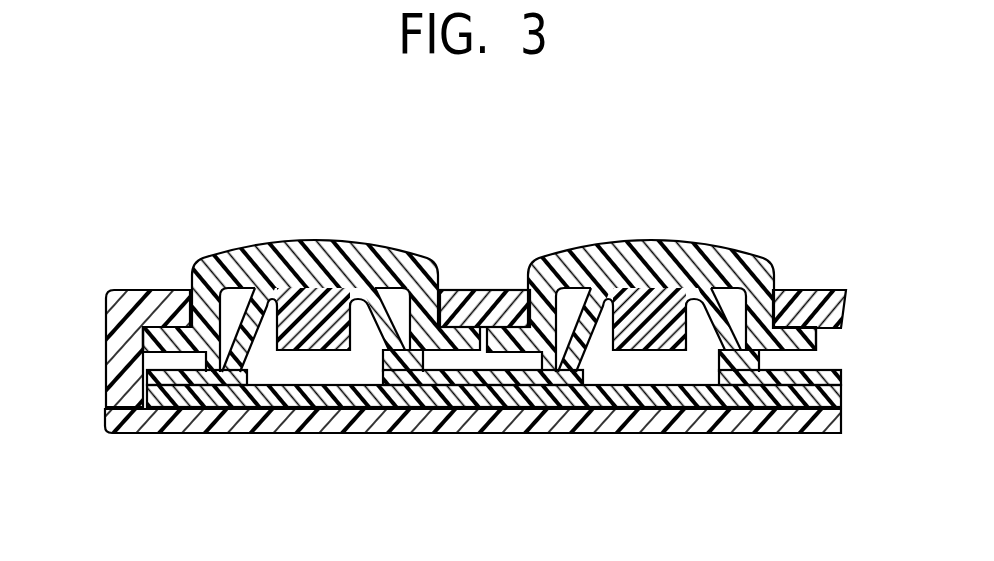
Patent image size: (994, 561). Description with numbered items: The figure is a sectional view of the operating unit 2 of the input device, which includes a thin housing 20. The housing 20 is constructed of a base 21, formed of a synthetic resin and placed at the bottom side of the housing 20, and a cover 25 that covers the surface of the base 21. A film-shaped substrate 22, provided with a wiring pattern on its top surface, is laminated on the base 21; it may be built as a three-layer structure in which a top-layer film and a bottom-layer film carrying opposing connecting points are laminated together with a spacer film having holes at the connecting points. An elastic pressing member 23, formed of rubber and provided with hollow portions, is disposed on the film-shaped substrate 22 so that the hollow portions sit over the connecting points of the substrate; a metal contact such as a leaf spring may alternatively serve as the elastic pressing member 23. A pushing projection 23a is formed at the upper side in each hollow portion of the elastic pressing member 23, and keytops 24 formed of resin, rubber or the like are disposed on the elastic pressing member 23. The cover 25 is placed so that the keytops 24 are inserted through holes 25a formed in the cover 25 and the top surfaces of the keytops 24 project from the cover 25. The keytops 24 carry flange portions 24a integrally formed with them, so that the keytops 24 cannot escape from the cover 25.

The operating unit 2 is at (511, 454).
The housing 20 is at (475, 354).
The base 21 is at (478, 415).
The film-shaped substrate 22 is at (823, 401).
The elastic pressing member 23 is at (302, 355).
The pushing projection 23a is at (340, 352).
The keytop 24 is at (338, 255).
The flange portion 24a is at (168, 357).
The cover 25 is at (122, 302).
The hole 25a is at (452, 305).